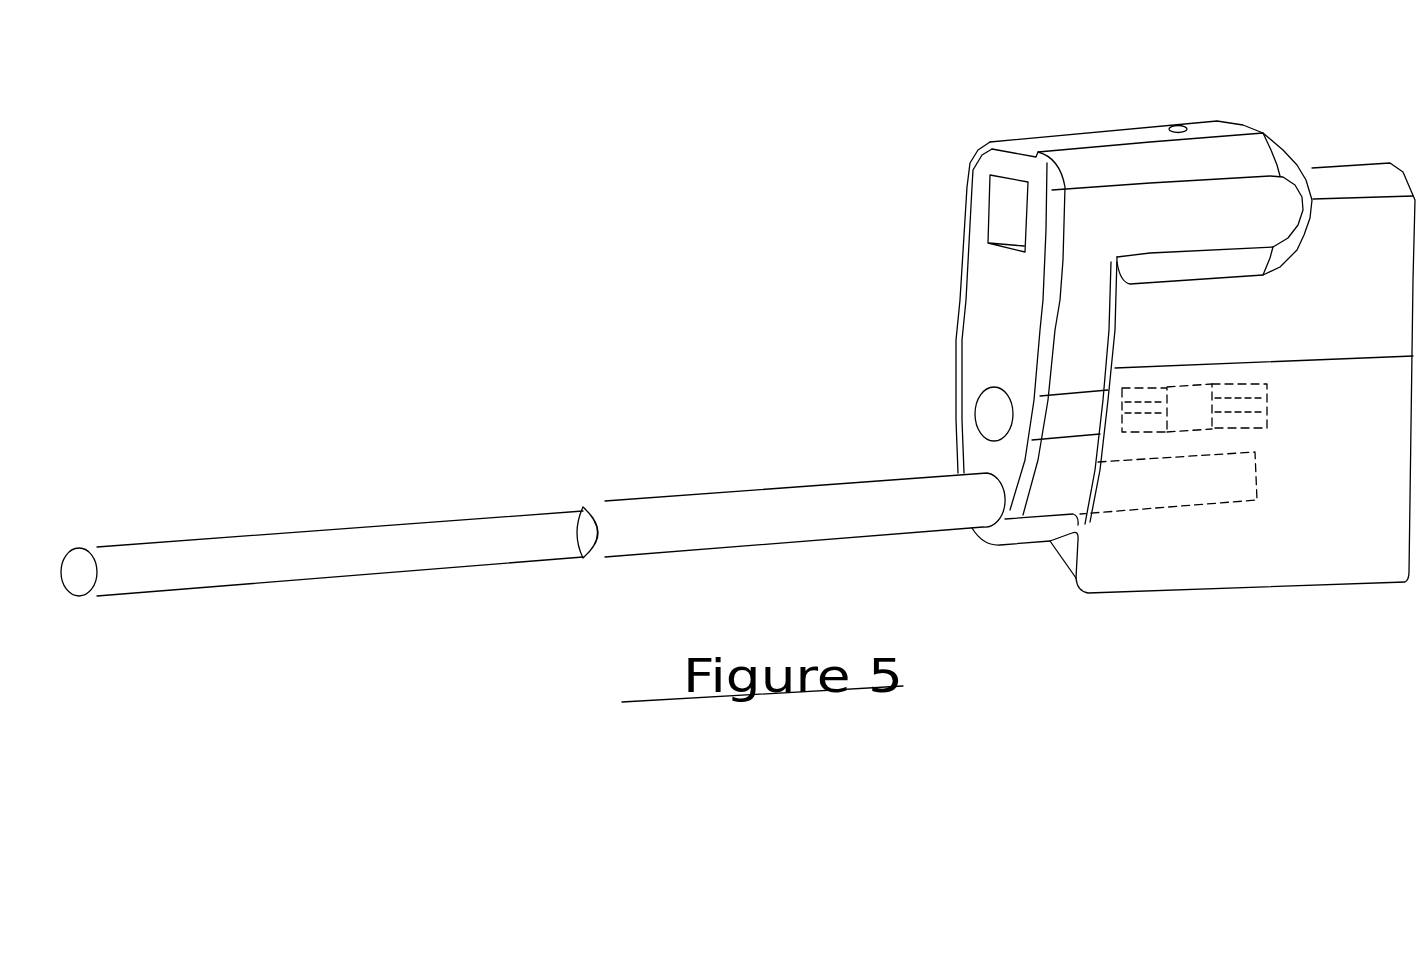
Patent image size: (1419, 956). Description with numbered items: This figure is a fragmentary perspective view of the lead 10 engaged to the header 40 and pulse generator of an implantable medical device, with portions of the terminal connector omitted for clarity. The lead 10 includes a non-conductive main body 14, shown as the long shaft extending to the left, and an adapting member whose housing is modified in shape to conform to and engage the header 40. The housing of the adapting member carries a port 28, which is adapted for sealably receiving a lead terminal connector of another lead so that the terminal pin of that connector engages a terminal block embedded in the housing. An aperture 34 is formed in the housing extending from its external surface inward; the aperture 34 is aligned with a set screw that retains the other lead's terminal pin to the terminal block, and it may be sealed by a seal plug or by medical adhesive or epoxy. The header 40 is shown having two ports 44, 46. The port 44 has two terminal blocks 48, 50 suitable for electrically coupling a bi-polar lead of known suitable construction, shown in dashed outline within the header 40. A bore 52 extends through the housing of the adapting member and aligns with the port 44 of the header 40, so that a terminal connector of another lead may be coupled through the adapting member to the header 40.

The lead 10 is at (358, 474).
The non-conductive main body 14 is at (650, 510).
The port 28 is at (1002, 214).
The aperture 34 is at (1180, 124).
The header 40 is at (1277, 555).
The port 44 is at (1268, 401).
The port 46 is at (1258, 472).
The terminal block 48 is at (1145, 387).
The terminal block 50 is at (1240, 383).
The bore 52 is at (990, 409).